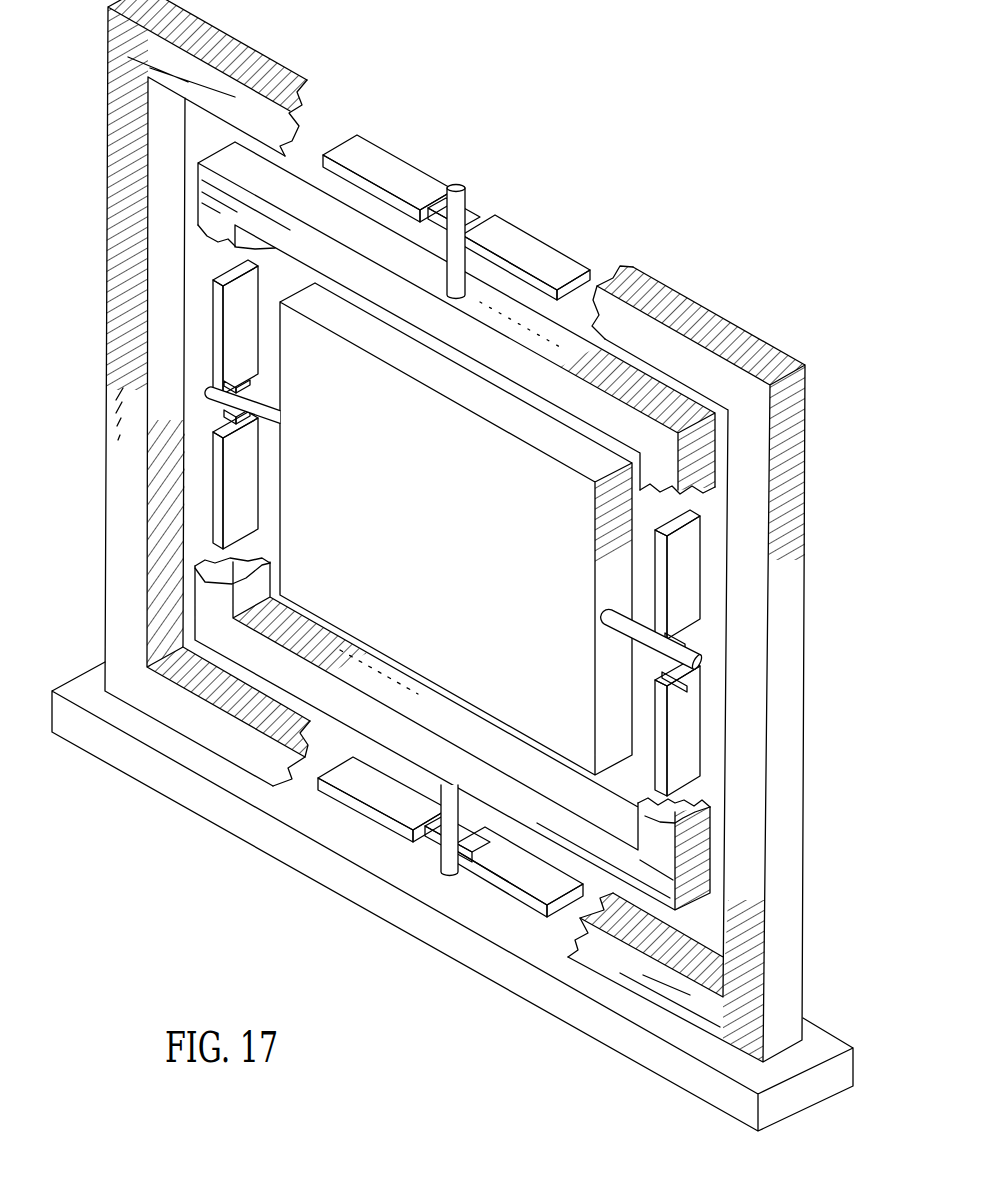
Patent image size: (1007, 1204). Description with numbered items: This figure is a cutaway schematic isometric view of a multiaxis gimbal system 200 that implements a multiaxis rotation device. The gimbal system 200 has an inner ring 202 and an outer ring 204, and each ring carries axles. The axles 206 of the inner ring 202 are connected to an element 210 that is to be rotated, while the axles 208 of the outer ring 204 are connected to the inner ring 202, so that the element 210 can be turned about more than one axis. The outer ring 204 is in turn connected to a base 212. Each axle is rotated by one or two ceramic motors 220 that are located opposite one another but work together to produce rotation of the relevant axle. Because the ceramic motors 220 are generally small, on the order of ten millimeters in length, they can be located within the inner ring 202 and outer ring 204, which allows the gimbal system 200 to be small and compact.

The gimbal system 200 is at (445, 565).
The inner ring 202 is at (617, 393).
The outer ring 204 is at (690, 343).
The axles of the inner ring 206 is at (258, 413).
The axles of the outer ring 208 is at (458, 275).
The element to be rotated 210 is at (333, 383).
The base 212 is at (640, 1050).
The ceramic motors 220 is at (530, 247).